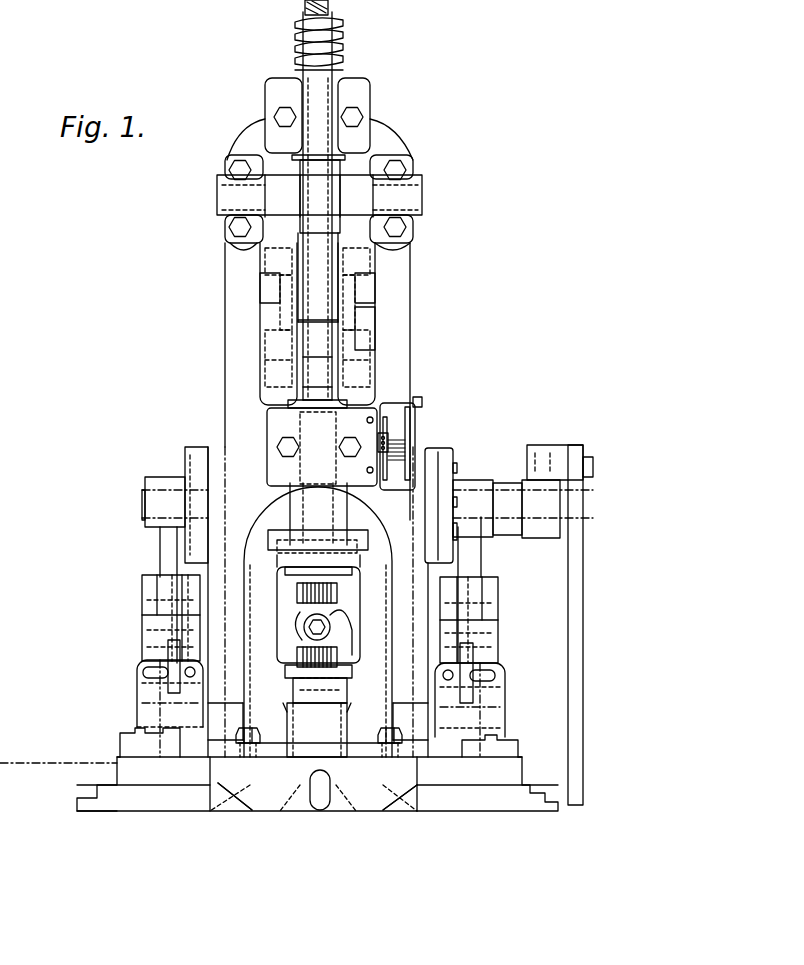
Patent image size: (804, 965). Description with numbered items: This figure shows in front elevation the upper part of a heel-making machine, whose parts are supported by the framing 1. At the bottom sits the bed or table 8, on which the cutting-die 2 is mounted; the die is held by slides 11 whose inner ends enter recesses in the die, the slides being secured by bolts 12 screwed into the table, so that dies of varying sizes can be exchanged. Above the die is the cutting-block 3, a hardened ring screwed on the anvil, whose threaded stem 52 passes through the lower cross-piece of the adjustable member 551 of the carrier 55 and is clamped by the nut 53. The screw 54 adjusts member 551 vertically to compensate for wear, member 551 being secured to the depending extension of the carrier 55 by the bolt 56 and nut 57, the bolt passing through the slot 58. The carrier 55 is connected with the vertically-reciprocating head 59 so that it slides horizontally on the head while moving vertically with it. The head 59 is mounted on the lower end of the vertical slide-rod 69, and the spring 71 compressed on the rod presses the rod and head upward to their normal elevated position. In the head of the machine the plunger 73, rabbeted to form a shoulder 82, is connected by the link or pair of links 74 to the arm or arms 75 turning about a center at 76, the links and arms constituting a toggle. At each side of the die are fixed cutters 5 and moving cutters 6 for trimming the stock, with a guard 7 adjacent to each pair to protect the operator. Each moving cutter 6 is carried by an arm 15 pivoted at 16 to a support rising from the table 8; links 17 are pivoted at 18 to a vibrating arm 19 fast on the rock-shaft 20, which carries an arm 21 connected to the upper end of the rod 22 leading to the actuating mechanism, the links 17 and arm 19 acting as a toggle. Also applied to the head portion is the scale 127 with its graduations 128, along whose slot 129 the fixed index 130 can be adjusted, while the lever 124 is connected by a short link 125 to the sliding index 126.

The framing 1 is at (234, 372).
The cutting-die 2 is at (322, 745).
The cutting-block 3 is at (290, 705).
The fixed cutters 5 is at (143, 712).
The moving cutters 6 is at (140, 684).
The guard 7 is at (150, 670).
The bed or table 8 is at (77, 798).
The slides 11 is at (265, 748).
The bolts 12 is at (240, 735).
The arm 15 is at (165, 655).
The pivot 16 is at (118, 752).
The link or pair of links 17 is at (142, 620).
The pivotal connection 18 is at (142, 597).
The vibrating arm 19 is at (165, 550).
The rock-shaft 20 is at (145, 505).
The arm 21 is at (540, 450).
The rod 22 is at (583, 550).
The threaded stem 52 is at (303, 640).
The nut 53 is at (350, 620).
The screw 54 is at (333, 600).
The carrier 55 is at (277, 543).
The bolt 56 is at (308, 622).
The nut 57 is at (312, 617).
The slot 58 is at (308, 636).
The vertically-reciprocating head 59 is at (288, 543).
The vertical slide-rod 69 is at (328, 8).
The spring 71 is at (340, 54).
The plunger 73 is at (292, 388).
The link or pair of links 74 is at (362, 332).
The arm or arms 75 is at (405, 233).
The center 76 is at (422, 194).
The shoulder 82 is at (320, 322).
The lever 124 is at (408, 408).
The short link 125 is at (400, 430).
The sliding index 126 is at (407, 448).
The scale 127 is at (398, 405).
The graduations 128 is at (418, 478).
The slot 129 is at (345, 422).
The fixed index 130 is at (312, 455).
The adjustable member of the carrier 551 is at (340, 650).